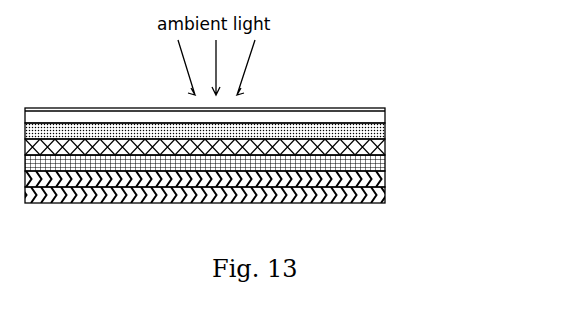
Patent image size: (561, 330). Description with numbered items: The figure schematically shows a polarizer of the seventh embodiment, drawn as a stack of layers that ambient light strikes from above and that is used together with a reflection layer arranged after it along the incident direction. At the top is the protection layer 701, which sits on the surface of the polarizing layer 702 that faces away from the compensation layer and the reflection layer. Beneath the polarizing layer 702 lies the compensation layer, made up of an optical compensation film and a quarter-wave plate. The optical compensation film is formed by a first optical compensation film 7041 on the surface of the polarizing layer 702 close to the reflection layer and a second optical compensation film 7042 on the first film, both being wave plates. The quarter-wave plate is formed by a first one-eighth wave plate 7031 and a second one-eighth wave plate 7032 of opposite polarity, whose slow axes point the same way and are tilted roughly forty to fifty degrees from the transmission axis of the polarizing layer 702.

The protection layer 701 is at (385, 122).
The polarizing layer 702 is at (385, 132).
The first optical compensation film 7041 is at (385, 144).
The second optical compensation film 7042 is at (385, 165).
The first one-eighth wave plate 7031 is at (385, 182).
The second one-eighth wave plate 7032 is at (385, 194).